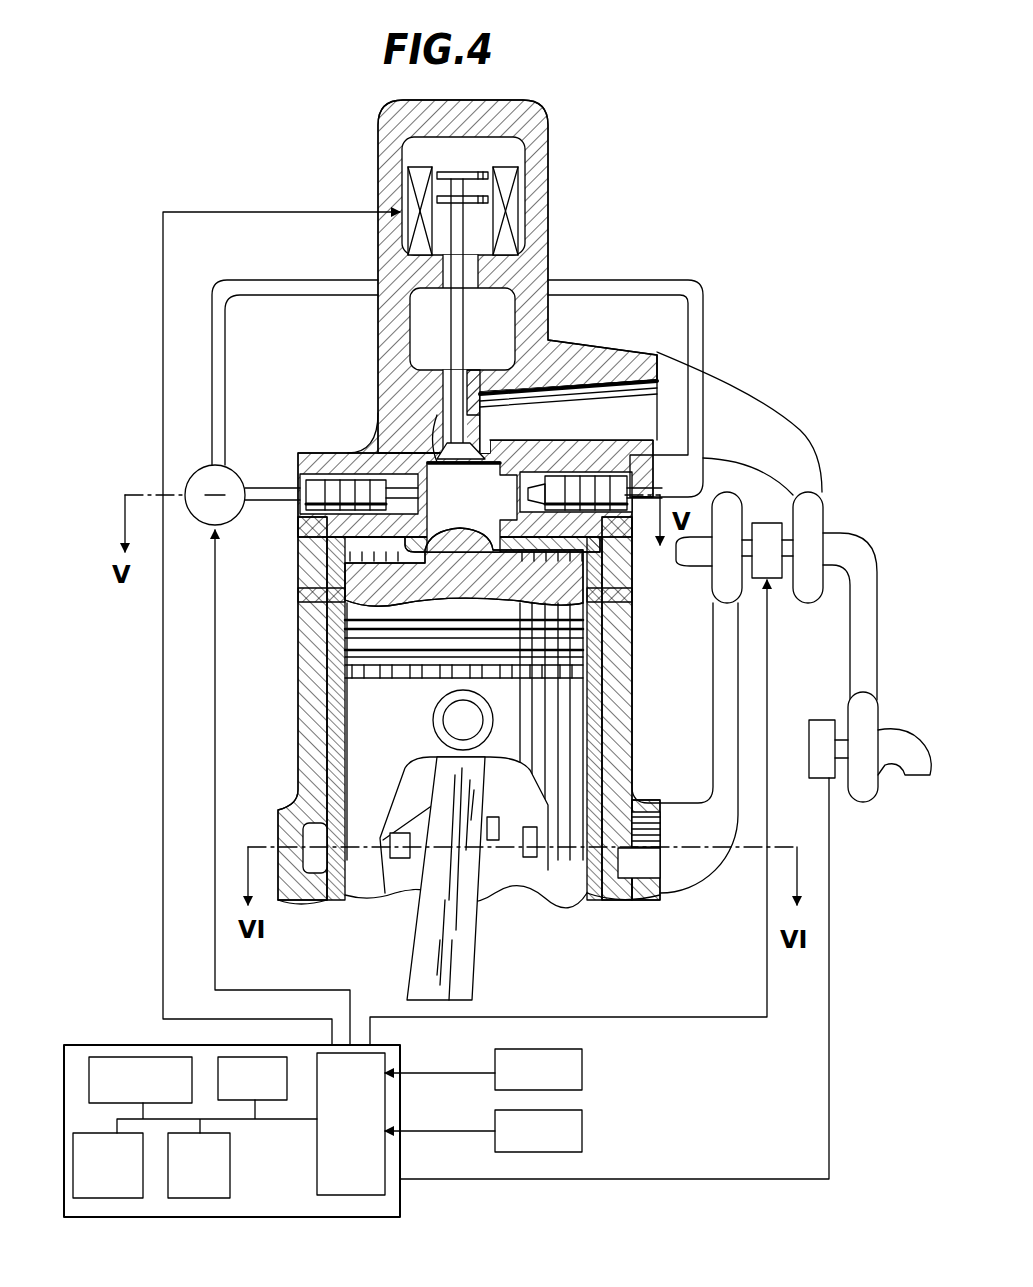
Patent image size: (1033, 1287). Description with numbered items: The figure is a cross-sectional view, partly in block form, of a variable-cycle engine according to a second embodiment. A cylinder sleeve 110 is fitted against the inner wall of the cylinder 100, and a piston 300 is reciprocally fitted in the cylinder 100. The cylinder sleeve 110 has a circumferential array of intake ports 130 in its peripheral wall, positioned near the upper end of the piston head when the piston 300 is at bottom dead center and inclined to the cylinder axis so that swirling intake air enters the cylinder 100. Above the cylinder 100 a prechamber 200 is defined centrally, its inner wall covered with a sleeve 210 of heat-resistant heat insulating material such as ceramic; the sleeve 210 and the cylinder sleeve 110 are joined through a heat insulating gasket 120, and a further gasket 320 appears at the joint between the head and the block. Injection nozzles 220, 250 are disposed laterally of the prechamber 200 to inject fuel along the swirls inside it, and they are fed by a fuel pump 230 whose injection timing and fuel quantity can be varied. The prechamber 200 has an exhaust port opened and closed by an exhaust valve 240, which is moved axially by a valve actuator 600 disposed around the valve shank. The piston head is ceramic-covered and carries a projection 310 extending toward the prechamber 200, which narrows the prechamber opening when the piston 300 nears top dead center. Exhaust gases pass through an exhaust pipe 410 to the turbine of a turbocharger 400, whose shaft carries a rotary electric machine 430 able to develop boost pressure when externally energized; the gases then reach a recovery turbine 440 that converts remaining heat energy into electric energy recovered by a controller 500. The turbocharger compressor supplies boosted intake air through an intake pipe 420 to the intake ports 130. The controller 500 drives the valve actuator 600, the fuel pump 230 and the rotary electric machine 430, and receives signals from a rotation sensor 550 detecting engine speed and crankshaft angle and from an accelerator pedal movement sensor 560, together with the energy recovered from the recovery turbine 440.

The cylinder 100 is at (290, 722).
The cylinder sleeve 110 is at (600, 892).
The heat insulating gasket 120 is at (630, 610).
The intake ports 130 is at (423, 826).
The prechamber 200 is at (352, 440).
The sleeve 210 is at (410, 445).
The injection nozzle 220 is at (300, 483).
The fuel pump 230 is at (205, 485).
The exhaust valve 240 is at (462, 324).
The injection nozzle 250 is at (573, 470).
The piston 300 is at (464, 694).
The projection 310 is at (462, 506).
The head gasket 320 is at (625, 570).
The turbocharger 400 is at (834, 522).
The exhaust pipe 410 is at (722, 392).
The intake pipe 420 is at (685, 870).
The rotary electric machine 430 is at (772, 580).
The recovery turbine 440 is at (884, 730).
The controller 500 is at (94, 1042).
The rotation sensor 550 is at (483, 1069).
The accelerator pedal movement sensor 560 is at (483, 1131).
The valve actuator 600 is at (512, 158).